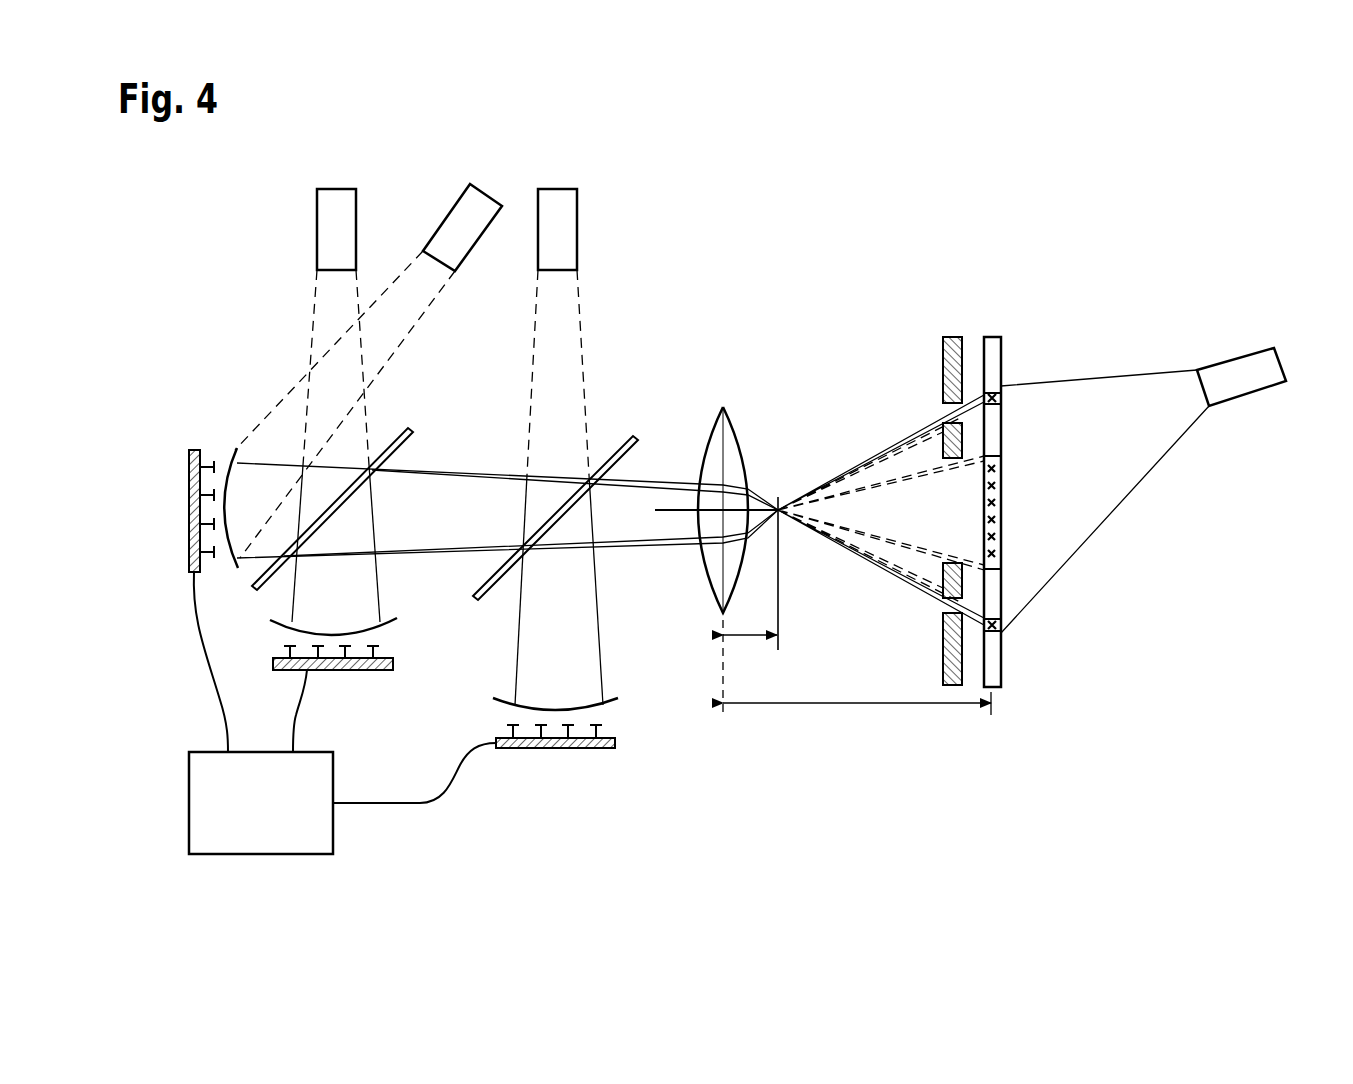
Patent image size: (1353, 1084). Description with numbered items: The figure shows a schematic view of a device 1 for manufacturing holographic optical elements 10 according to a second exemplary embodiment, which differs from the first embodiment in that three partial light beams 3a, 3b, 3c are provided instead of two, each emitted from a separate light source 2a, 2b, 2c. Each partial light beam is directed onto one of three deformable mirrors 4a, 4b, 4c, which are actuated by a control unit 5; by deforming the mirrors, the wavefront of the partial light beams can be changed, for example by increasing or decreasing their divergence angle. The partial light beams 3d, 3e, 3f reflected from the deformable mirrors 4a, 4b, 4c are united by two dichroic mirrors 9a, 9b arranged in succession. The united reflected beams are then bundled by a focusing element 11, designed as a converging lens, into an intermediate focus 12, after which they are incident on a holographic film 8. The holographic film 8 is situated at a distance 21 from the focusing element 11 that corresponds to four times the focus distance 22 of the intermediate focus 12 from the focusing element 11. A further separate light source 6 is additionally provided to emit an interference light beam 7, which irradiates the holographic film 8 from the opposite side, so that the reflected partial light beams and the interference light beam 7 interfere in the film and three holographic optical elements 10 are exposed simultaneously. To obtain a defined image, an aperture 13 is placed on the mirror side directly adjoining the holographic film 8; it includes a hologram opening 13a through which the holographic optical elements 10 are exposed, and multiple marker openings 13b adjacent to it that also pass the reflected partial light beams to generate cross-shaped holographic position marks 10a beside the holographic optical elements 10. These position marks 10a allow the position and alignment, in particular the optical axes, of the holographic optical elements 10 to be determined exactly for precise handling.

The device 1 is at (780, 172).
The light source 2a is at (328, 237).
The light source 2b is at (460, 248).
The light source 2c is at (566, 235).
The partial light beam 3a is at (313, 320).
The partial light beam 3b is at (433, 305).
The partial light beam 3c is at (582, 320).
The reflected partial light beam 3d is at (383, 608).
The reflected partial light beam 3e is at (250, 560).
The reflected partial light beam 3f is at (602, 685).
The deformable mirror 4a is at (200, 446).
The deformable mirror 4b is at (402, 652).
The deformable mirror 4c is at (623, 730).
The control unit 5 is at (270, 826).
The light source 6 is at (1240, 360).
The interference light beam 7 is at (1120, 376).
The holographic film 8 is at (996, 356).
The dichroic mirror 9a is at (412, 432).
The dichroic mirror 9b is at (634, 436).
The holographic optical element 10 is at (1012, 543).
The holographic position mark 10a is at (1001, 398).
The focusing element 11 is at (745, 448).
The intermediate focus 12 is at (779, 505).
The aperture 13 is at (952, 337).
The hologram opening 13a is at (940, 463).
The marker opening 13b is at (945, 411).
The distance 21 is at (857, 708).
The focus distance 22 is at (760, 638).